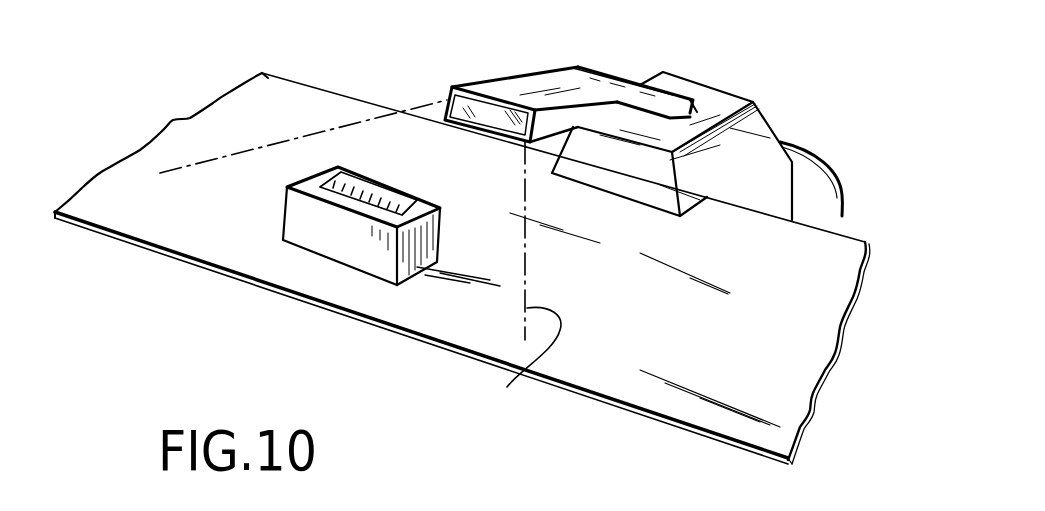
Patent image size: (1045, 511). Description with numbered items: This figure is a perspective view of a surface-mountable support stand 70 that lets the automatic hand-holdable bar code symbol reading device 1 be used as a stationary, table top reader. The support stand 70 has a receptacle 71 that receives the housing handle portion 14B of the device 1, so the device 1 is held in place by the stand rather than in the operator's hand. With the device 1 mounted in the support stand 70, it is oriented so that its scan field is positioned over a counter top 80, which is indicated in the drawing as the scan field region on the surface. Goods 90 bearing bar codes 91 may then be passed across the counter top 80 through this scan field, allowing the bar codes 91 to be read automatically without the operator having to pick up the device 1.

The bar code symbol reading device 1 is at (521, 59).
The housing handle portion 14B is at (630, 80).
The support stand 70 is at (668, 73).
The receptacle 71 is at (690, 97).
The counter top 80 is at (228, 257).
The goods 90 is at (360, 253).
The bar codes 91 is at (323, 182).